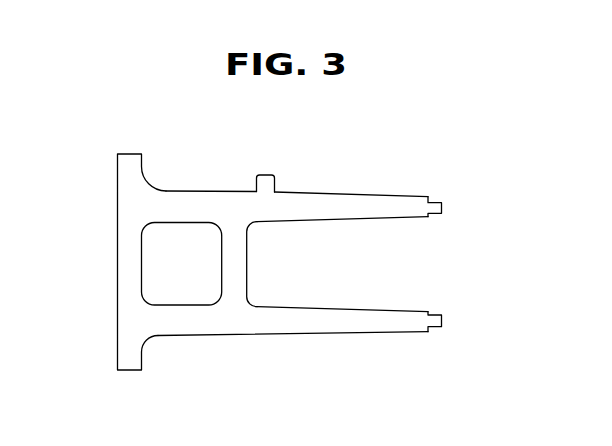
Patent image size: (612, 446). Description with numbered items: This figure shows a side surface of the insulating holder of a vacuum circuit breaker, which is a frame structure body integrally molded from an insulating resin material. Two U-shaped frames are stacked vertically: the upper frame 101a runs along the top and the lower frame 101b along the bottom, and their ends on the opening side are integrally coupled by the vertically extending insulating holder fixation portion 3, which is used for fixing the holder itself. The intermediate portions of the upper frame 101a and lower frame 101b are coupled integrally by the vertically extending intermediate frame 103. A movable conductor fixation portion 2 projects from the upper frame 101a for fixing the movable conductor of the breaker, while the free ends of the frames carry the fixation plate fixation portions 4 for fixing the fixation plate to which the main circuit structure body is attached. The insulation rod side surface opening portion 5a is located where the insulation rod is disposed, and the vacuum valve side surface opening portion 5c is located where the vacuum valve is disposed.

The fixation portion 3 is at (131, 215).
The insulation rod side surface opening portion 5a is at (168, 250).
The vacuum valve side surface opening portion 5c is at (310, 245).
The movable conductor fixation portion 2 is at (267, 173).
The fixation plate fixation portion 4 is at (442, 207).
The upper frame 101a is at (292, 207).
The lower frame 101b is at (298, 321).
The intermediate frame 103 is at (240, 271).